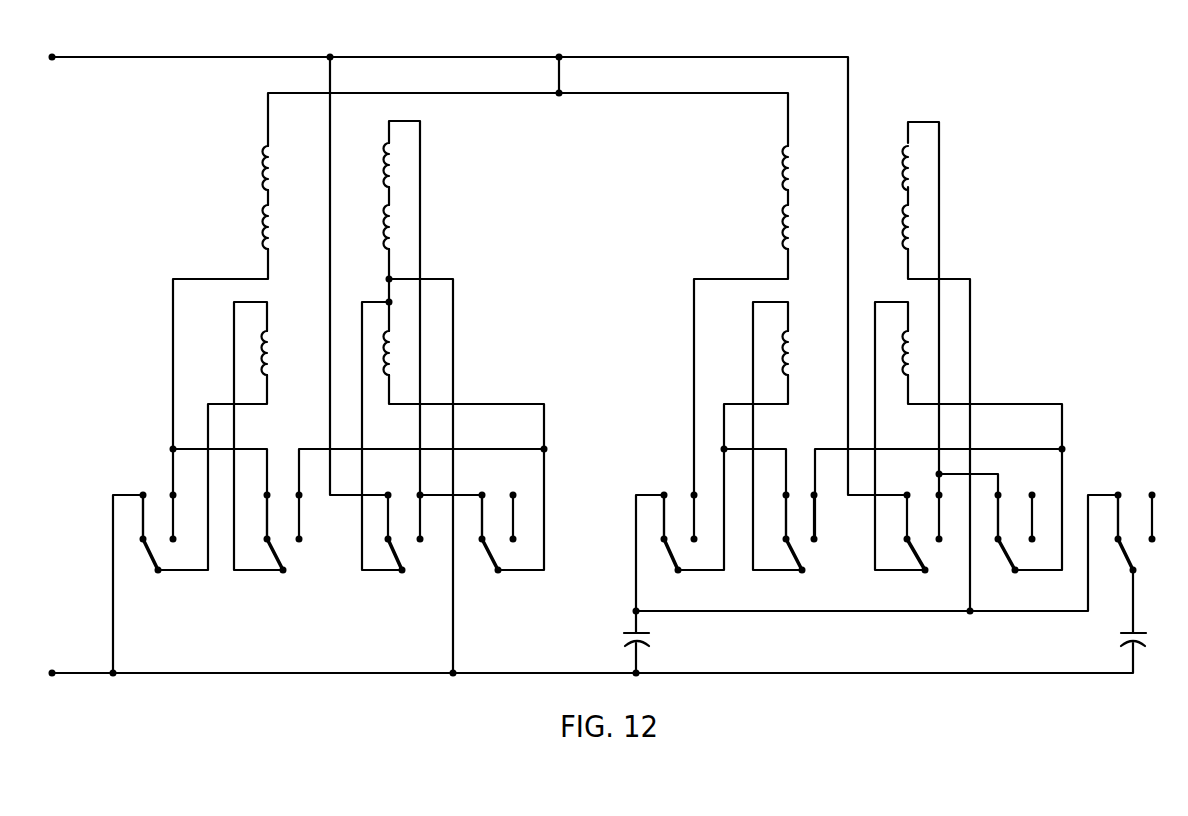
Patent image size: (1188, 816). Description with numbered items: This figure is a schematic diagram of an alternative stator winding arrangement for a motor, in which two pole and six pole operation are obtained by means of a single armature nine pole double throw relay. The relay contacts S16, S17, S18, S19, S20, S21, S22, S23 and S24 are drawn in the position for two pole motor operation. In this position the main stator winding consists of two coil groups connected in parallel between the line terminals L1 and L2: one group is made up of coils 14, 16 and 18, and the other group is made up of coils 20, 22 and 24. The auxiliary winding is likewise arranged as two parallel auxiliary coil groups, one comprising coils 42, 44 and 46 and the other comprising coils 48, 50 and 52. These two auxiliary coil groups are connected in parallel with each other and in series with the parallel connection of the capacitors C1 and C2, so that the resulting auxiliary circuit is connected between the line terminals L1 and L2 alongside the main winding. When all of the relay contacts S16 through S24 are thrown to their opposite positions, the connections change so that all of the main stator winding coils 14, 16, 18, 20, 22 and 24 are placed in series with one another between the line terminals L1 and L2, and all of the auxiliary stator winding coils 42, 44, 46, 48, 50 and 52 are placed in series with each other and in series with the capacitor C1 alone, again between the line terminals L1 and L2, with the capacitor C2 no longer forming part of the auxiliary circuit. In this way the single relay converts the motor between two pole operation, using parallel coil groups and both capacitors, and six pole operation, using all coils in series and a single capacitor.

The line terminal L1 is at (51, 56).
The line terminal L2 is at (51, 672).
The coil 14 is at (270, 358).
The coil 16 is at (272, 158).
The coil 18 is at (269, 223).
The coil 20 is at (392, 358).
The coil 22 is at (393, 171).
The coil 24 is at (393, 230).
The coil 42 is at (791, 358).
The coil 44 is at (791, 171).
The coil 46 is at (791, 235).
The coil 48 is at (910, 358).
The coil 50 is at (911, 173).
The coil 52 is at (911, 232).
The relay contact S16 is at (146, 559).
The relay contact S17 is at (284, 556).
The relay contact S18 is at (404, 556).
The relay contact S19 is at (488, 558).
The relay contact S20 is at (670, 567).
The relay contact S21 is at (804, 563).
The relay contact S22 is at (928, 562).
The relay contact S23 is at (1005, 567).
The relay contact S24 is at (1136, 559).
The capacitor C1 is at (655, 638).
The capacitor C2 is at (1118, 639).